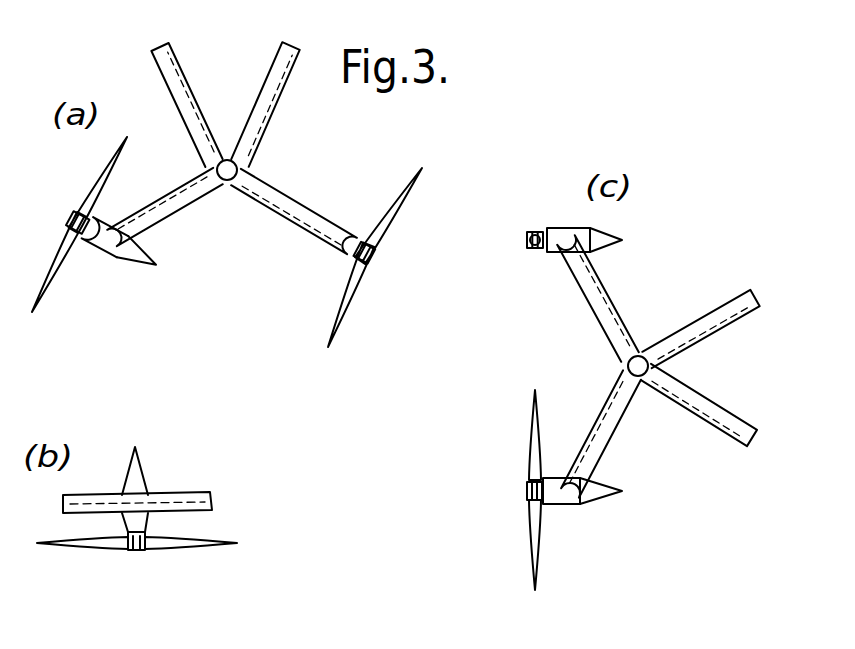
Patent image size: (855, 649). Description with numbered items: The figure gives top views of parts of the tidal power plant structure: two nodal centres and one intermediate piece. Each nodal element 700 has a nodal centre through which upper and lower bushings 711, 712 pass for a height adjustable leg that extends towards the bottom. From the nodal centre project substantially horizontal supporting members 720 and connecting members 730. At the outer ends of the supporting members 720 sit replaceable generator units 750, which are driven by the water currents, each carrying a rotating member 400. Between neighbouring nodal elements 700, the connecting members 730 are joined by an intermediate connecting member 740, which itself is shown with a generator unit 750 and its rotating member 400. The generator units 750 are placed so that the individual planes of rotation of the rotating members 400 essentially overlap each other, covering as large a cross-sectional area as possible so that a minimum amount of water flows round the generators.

In FIG. 3A, the nodal element 700 is at (396, 144).
In FIG. 3A, the upper bushing 711 is at (317, 170).
In FIG. 3C, the upper bushing 711 is at (702, 435).
In FIG. 3A, the lower bushing 712 is at (240, 177).
In FIG. 3C, the lower bushing 712 is at (653, 380).
In FIG. 3A, the supporting member 720 is at (276, 223).
In FIG. 3C, the supporting member 720 is at (605, 335).
In FIG. 3A, the connecting member 730 is at (244, 94).
In FIG. 3C, the connecting member 730 is at (697, 375).
In FIG. 3B, the intermediate connecting member 740 is at (96, 488).
In FIG. 3B, the generator unit 750 is at (153, 474).
In FIG. 3C, the generator unit 750 is at (580, 508).
In FIG. 3B, the rotating member 400 is at (173, 556).
In FIG. 3C, the rotating member 400 is at (520, 465).